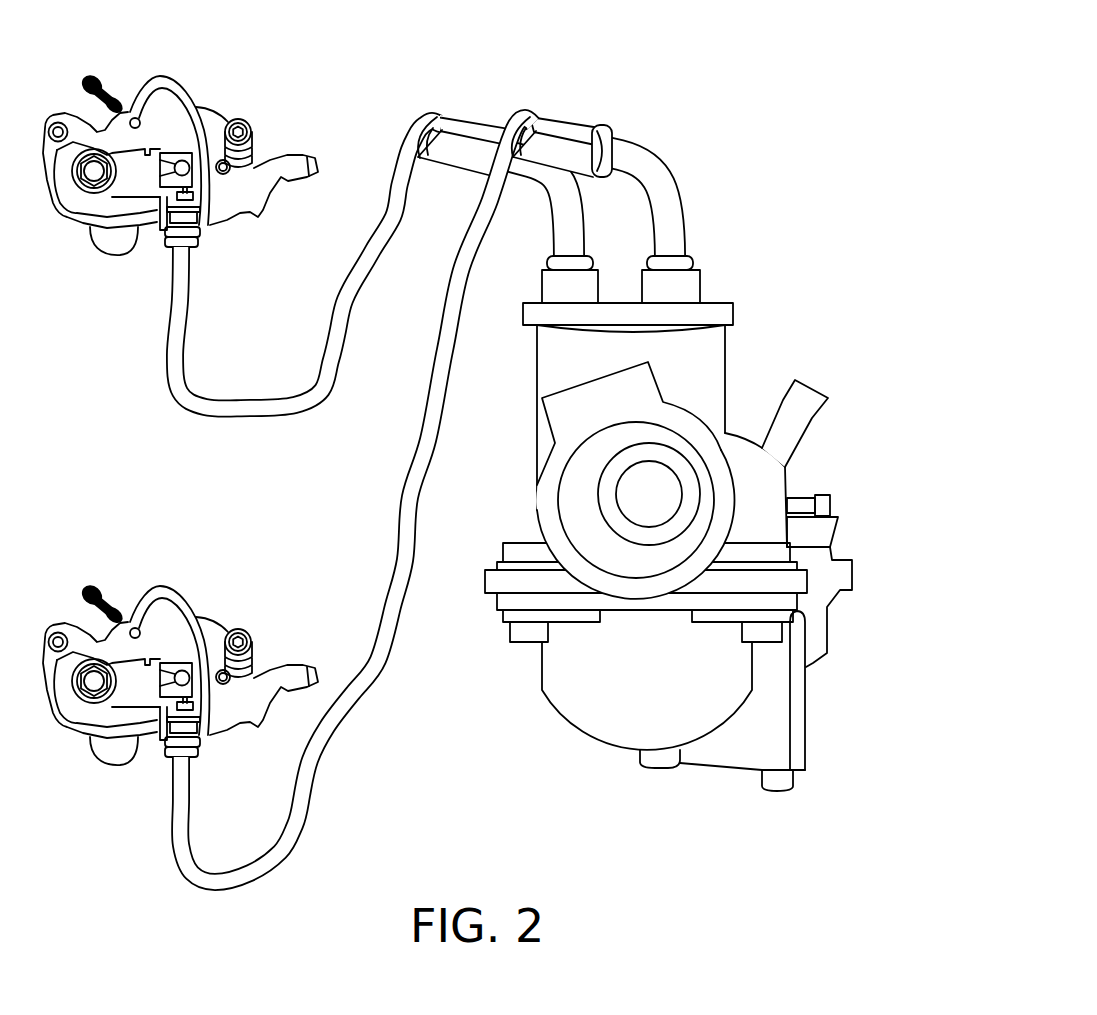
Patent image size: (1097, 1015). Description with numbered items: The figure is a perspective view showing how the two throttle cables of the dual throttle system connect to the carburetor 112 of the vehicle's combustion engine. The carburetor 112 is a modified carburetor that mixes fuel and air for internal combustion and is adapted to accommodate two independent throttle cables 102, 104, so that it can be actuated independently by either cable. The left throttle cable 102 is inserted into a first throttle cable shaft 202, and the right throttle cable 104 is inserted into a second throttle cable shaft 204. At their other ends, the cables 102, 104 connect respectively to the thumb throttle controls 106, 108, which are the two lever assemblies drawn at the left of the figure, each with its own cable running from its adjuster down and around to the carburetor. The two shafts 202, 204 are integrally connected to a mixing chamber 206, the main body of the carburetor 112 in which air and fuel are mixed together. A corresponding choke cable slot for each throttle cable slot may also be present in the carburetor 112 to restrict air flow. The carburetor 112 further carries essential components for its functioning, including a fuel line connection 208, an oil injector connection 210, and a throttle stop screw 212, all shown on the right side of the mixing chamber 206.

The left throttle cable 102 is at (397, 625).
The right throttle cable 104 is at (255, 404).
The thumb throttle control 106 is at (293, 697).
The thumb throttle control 108 is at (285, 181).
The carburetor 112 is at (721, 470).
The first throttle cable shaft 202 is at (573, 123).
The second throttle cable shaft 204 is at (463, 123).
The mixing chamber 206 is at (733, 373).
The fuel line connection 208 is at (812, 418).
The oil injector connection 210 is at (840, 535).
The throttle stop screw 212 is at (833, 507).